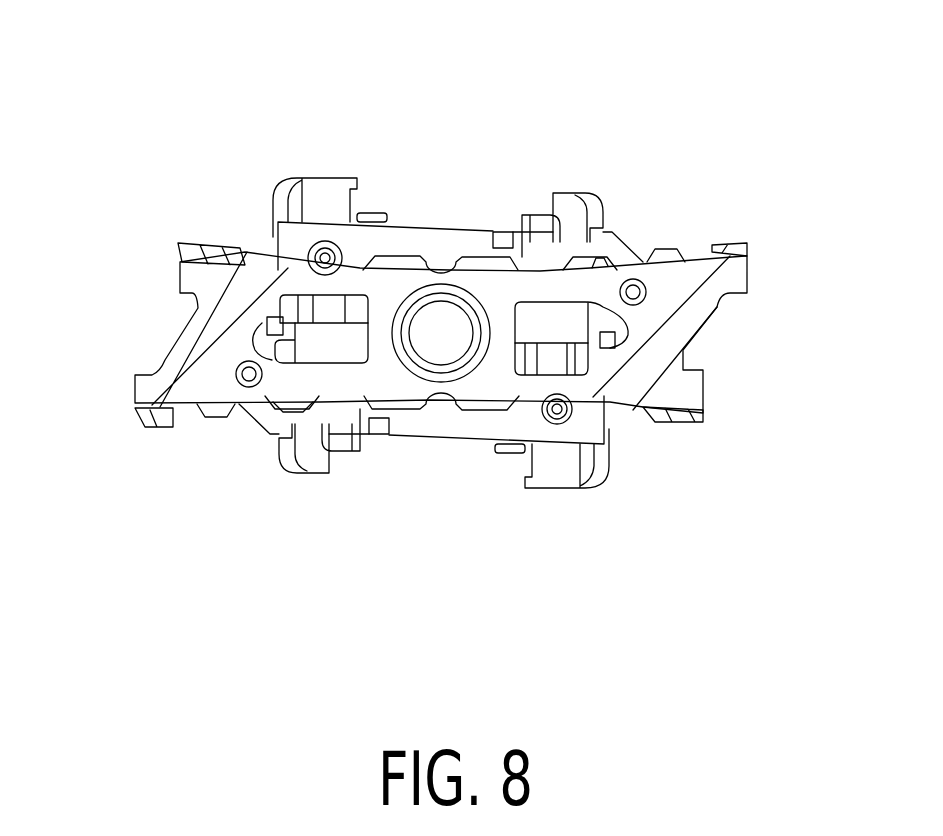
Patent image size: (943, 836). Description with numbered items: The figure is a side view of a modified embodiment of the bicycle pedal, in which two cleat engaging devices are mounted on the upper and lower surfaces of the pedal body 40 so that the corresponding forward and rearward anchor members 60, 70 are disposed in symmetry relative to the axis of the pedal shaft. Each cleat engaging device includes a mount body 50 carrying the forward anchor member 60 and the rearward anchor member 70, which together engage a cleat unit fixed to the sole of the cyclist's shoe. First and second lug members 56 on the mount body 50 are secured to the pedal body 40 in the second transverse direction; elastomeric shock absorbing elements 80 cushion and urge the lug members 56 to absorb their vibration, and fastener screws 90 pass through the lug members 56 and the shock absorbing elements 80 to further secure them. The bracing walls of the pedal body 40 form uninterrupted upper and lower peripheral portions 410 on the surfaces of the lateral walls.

The pedal body 40 is at (753, 267).
The upper and lower peripheral portions 410 is at (203, 240).
The mount body 50 is at (406, 225).
The lug members 56 is at (296, 312).
The forward anchor member 60 is at (578, 194).
The rearward anchor member 70 is at (312, 170).
The elastomeric shock absorbing elements 80 is at (286, 344).
The fastener screws 90 is at (283, 317).